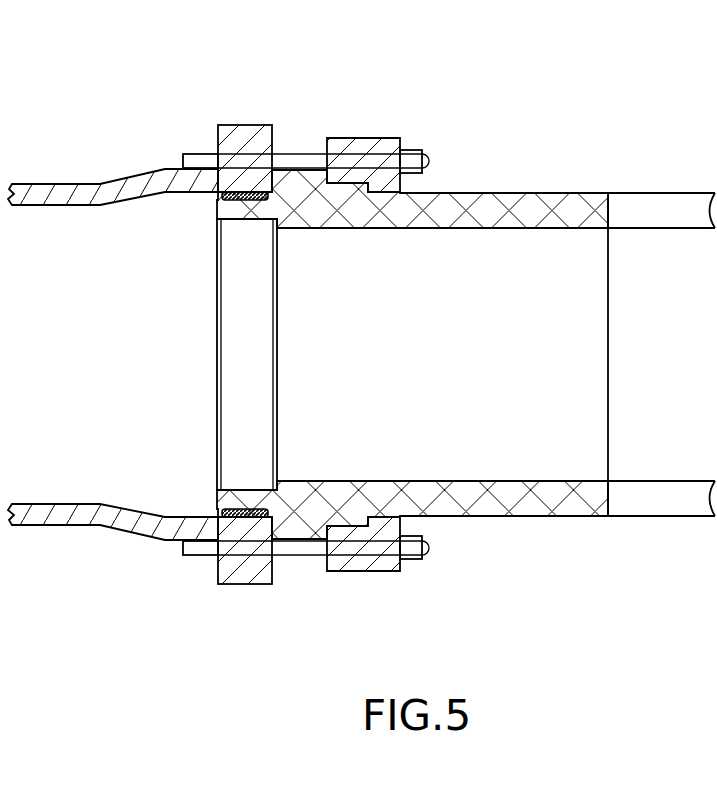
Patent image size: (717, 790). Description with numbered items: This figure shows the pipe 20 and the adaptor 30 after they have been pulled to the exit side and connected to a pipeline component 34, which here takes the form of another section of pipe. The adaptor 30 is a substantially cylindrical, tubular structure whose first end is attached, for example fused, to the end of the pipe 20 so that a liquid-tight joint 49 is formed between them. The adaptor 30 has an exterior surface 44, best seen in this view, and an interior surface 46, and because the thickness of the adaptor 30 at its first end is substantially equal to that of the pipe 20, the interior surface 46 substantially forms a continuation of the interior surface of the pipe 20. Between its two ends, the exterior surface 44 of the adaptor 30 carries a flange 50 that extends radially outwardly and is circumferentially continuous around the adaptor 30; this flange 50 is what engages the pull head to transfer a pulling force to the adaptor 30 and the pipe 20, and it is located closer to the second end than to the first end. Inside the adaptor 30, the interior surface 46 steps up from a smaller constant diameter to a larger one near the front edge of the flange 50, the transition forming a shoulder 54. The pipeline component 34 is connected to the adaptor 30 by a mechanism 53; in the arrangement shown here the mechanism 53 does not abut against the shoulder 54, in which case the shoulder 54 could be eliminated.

The pipe 20 is at (684, 200).
The adaptor 30 is at (470, 548).
The pipeline component 34 is at (66, 184).
The exterior surface 44 is at (457, 192).
The interior surface 46 is at (500, 230).
The liquid-tight joint 49 is at (612, 497).
The flange 50 is at (297, 185).
The mechanism 53 is at (352, 136).
The shoulder 54 is at (275, 221).